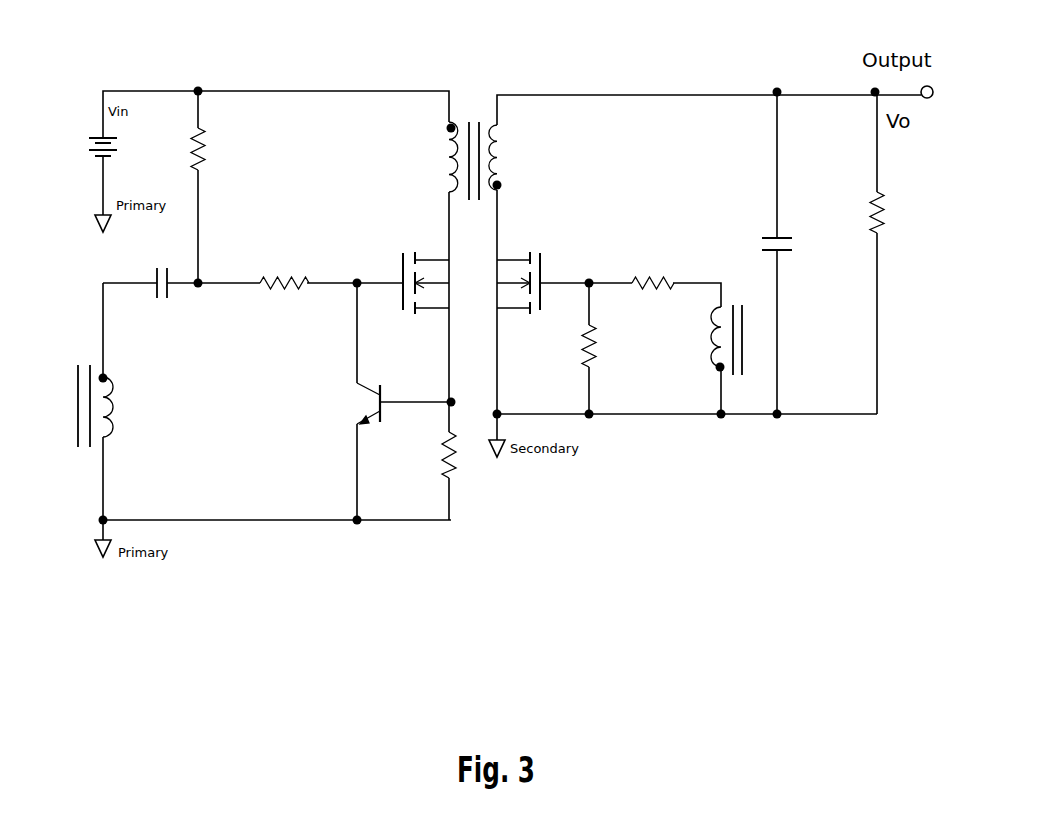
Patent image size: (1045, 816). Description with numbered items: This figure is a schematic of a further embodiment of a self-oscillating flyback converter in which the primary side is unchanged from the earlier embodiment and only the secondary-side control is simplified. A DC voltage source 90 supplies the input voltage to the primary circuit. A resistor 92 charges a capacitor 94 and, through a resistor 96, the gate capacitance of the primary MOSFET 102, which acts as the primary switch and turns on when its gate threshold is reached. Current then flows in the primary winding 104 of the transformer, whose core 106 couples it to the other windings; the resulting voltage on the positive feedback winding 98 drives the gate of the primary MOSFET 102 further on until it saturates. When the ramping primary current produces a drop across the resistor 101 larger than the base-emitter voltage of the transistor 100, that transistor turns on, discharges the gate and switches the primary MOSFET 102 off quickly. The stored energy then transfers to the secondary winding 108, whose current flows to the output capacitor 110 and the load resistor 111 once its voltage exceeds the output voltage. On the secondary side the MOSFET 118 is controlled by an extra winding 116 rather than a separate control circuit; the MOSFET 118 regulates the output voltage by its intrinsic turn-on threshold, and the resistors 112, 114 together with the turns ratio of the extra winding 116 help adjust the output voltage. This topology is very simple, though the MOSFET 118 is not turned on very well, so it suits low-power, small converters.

The input voltage source (battery Vin) 90 is at (85, 158).
The resistor 92 is at (212, 153).
The capacitor 94 is at (175, 298).
The resistor 96 is at (290, 298).
The feedback winding L3 98 is at (118, 436).
The transistor Q1 100 is at (355, 402).
The resistor 101 is at (462, 466).
The MOSFET M1 102 is at (392, 268).
The primary winding L1 104 is at (438, 166).
The transformer core 106 is at (475, 110).
The secondary winding L2 108 is at (514, 150).
The output capacitor 110 is at (797, 253).
The load resistor RLoad 111 is at (888, 236).
The resistor 112 is at (605, 352).
The resistor 114 is at (666, 262).
The extra winding 116 is at (707, 358).
The MOSFET M2 118 is at (529, 323).